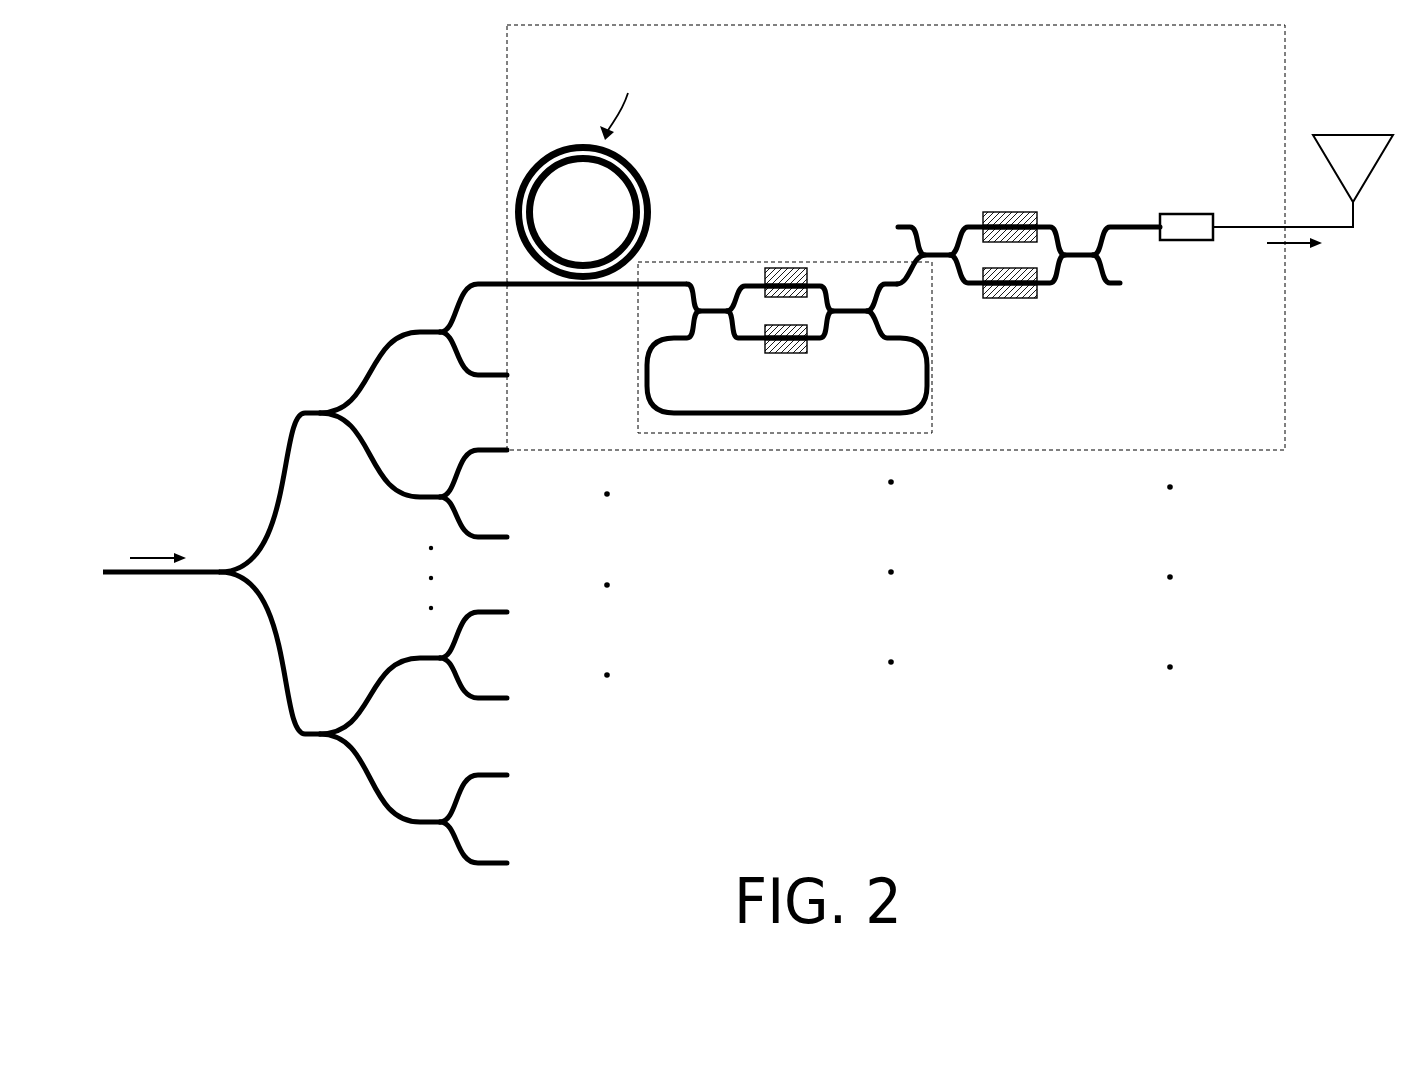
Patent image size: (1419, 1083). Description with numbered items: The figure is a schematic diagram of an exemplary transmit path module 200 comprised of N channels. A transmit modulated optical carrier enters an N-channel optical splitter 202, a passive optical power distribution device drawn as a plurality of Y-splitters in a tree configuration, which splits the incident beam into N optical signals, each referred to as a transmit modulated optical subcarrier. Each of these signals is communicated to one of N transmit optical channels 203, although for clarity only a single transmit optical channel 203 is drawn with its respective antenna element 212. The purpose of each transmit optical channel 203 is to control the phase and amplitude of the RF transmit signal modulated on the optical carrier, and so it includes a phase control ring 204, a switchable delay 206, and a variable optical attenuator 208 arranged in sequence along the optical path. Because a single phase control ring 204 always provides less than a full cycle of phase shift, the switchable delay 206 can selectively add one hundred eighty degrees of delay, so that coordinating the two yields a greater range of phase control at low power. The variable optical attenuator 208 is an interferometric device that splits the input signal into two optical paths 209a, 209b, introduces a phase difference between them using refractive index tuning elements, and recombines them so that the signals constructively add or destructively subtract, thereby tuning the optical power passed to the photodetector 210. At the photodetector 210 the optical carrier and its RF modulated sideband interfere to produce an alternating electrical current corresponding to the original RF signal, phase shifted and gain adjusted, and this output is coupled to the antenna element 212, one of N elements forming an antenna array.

The transmit path module 200 is at (268, 186).
The N-channel optical splitter 202 is at (367, 646).
The transmit optical channel 203 is at (1060, 107).
The phase control ring 204 is at (643, 183).
The switchable delay 206 is at (832, 250).
The variable optical attenuator 208 is at (1047, 200).
The optical path 209a is at (968, 226).
The optical path 209b is at (968, 286).
The photodetector 210 is at (1183, 241).
The antenna element 212 is at (1373, 167).